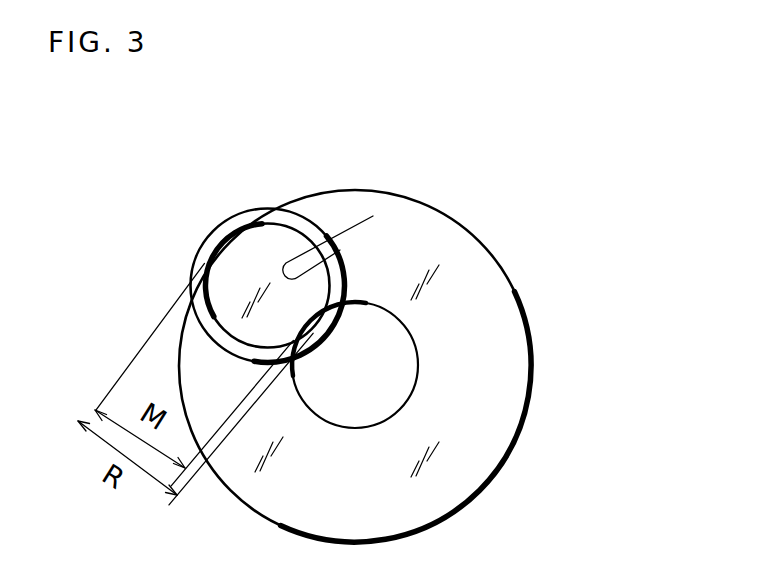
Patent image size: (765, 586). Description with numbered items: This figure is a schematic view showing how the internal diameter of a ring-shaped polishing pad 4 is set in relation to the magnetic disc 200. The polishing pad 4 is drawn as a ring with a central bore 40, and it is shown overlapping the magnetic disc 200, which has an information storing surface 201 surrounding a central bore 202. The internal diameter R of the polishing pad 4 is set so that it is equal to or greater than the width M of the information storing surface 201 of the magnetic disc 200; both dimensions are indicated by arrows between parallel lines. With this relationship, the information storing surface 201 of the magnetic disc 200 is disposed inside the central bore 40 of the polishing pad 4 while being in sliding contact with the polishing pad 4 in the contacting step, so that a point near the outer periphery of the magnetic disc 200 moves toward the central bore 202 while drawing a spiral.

The ring-shaped polishing pad 4 is at (72, 426).
The central bore 40 is at (373, 216).
The magnetic disc 200 is at (463, 227).
The information storing surface 201 is at (443, 307).
The central bore of the magnetic disc 202 is at (410, 335).